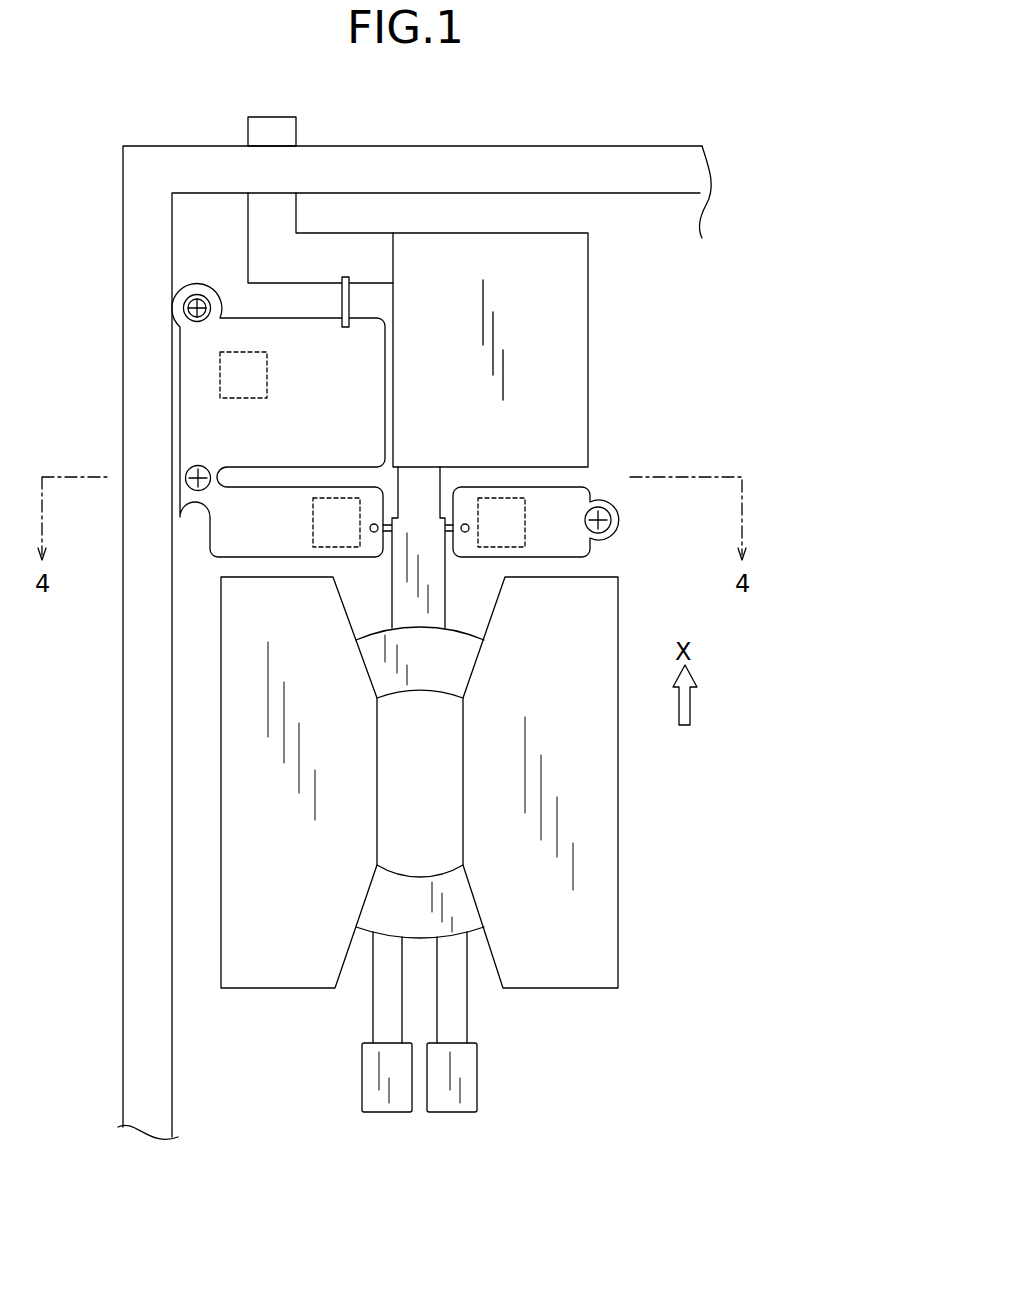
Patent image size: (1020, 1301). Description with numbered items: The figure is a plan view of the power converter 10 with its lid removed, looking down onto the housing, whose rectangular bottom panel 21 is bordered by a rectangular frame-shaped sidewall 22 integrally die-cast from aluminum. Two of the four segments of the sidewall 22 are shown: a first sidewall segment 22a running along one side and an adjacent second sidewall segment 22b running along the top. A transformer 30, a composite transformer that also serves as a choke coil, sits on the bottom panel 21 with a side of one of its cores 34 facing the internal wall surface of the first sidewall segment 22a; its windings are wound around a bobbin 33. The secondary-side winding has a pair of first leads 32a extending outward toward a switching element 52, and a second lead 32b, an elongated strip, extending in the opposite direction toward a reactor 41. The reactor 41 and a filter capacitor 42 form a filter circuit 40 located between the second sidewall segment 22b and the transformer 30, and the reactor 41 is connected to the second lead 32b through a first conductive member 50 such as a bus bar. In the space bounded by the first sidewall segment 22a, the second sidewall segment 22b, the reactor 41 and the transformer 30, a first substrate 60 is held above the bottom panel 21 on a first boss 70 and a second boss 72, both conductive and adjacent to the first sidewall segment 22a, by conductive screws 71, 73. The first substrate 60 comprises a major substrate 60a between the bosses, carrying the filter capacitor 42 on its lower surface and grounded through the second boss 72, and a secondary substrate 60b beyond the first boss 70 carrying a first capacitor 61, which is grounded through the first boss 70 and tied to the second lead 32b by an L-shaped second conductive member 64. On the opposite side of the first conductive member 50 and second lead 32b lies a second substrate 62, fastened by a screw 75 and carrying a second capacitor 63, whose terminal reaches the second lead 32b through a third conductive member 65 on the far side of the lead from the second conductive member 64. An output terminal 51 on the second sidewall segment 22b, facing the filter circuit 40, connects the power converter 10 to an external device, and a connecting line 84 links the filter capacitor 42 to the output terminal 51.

The power converter 10 is at (721, 100).
The bottom panel 21 is at (693, 207).
The sidewall 22 is at (386, 619).
The first sidewall segment 22a is at (125, 720).
The second sidewall segment 22b is at (467, 157).
The transformer 30 is at (434, 864).
The first leads 32a is at (373, 1022).
The second lead 32b is at (448, 623).
The bobbin 33 is at (440, 693).
The cores 34 is at (221, 802).
The filter circuit 40 is at (453, 330).
The reactor 41 is at (536, 233).
The filter capacitor 42 is at (267, 373).
The first conductive member 50 is at (443, 478).
The output terminal 51 is at (296, 130).
The switching element 52 is at (447, 1112).
The first substrate 60 is at (230, 445).
The major substrate 60a is at (193, 362).
The secondary substrate 60b is at (212, 558).
The first capacitor 61 is at (313, 519).
The second substrate 62 is at (558, 520).
The second capacitor 63 is at (525, 520).
The second conductive member 64 is at (374, 532).
The third conductive member 65 is at (465, 532).
The first boss 70 is at (212, 548).
The screw 71 is at (203, 468).
The second boss 72 is at (192, 282).
The screw 73 is at (205, 318).
The screw 75 is at (618, 517).
The connecting line 84 is at (349, 300).